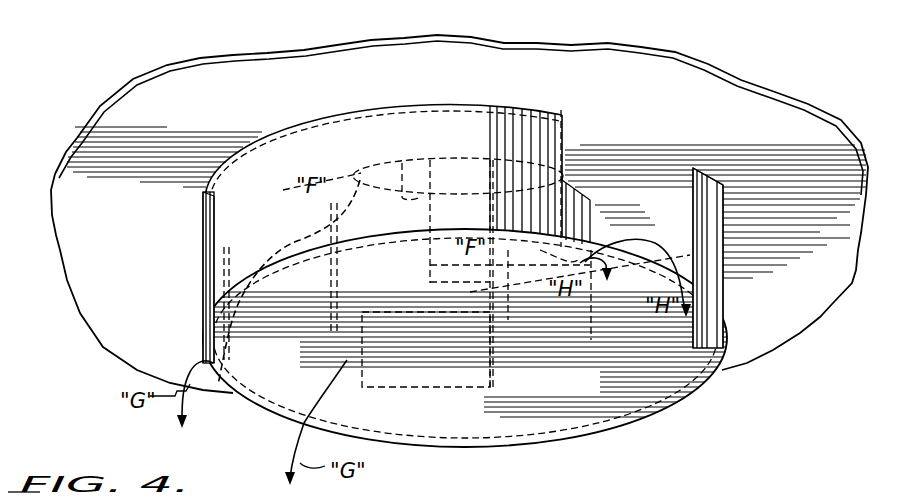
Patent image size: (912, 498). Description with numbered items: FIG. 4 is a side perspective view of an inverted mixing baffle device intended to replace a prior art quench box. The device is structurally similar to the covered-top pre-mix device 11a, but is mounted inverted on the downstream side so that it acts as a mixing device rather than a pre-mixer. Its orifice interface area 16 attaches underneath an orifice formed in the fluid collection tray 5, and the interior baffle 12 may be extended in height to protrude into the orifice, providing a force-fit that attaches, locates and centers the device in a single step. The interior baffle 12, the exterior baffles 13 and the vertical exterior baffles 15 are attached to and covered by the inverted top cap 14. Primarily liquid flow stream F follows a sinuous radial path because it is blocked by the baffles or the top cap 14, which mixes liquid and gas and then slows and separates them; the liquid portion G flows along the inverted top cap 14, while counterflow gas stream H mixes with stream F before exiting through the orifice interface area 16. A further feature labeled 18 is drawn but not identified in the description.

The fluid collection tray 5 is at (811, 121).
The covered-top pre-mix device 11a is at (739, 392).
The interior baffle 12 is at (580, 240).
The exterior baffles 13 is at (207, 272).
The top cap 14 is at (550, 413).
The vertical exterior baffles 15 is at (645, 415).
The orifice interface area 16 is at (556, 200).
The outlet 18 is at (585, 497).